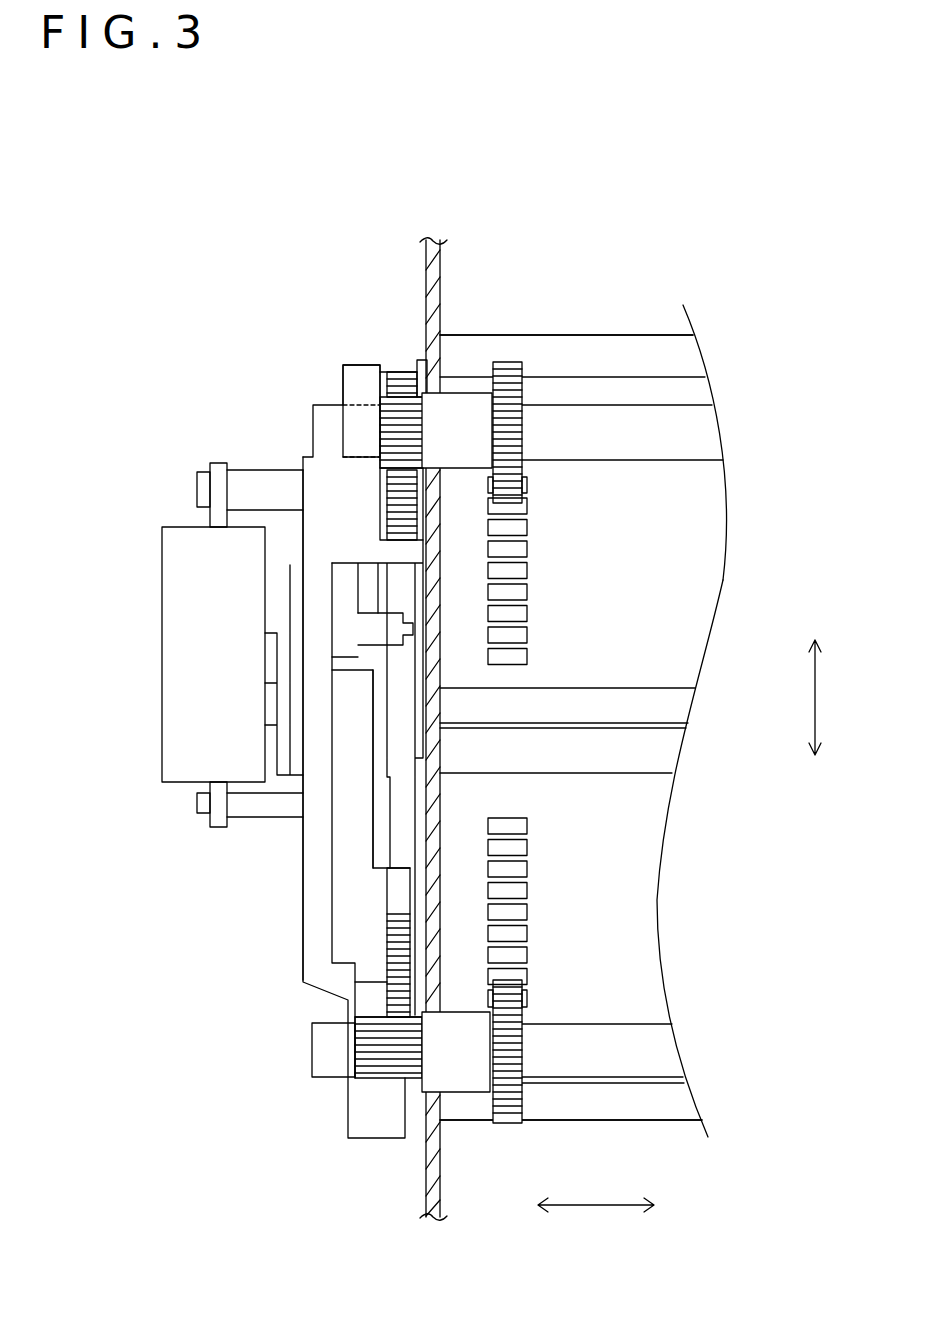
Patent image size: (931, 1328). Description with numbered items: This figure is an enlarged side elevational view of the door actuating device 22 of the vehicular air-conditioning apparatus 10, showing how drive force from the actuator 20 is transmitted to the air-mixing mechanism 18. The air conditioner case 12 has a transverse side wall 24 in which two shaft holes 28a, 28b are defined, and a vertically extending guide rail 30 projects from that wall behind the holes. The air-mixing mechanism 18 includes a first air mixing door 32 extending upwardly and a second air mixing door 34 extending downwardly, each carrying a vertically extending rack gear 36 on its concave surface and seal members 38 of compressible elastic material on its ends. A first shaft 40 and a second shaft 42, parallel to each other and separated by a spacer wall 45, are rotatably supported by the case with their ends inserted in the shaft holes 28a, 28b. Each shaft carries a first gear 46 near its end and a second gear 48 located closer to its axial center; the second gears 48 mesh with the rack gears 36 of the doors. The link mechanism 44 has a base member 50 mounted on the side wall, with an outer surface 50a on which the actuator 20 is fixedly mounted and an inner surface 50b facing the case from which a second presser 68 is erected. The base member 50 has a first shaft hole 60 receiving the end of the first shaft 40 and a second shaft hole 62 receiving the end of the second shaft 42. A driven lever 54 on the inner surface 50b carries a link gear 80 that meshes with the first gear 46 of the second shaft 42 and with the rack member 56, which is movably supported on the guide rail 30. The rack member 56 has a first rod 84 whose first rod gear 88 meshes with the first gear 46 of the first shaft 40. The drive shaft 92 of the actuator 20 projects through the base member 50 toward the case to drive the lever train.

The vehicular air-conditioning apparatus 10 is at (284, 271).
The air conditioner case 12 is at (450, 264).
The air-mixing mechanism 18 is at (748, 516).
The actuator 20 is at (143, 700).
The door actuating device 22 is at (280, 968).
The transverse side wall 24 is at (426, 317).
The shaft hole 28a is at (438, 399).
The shaft hole 28b is at (440, 1094).
The guide rail 30 is at (425, 357).
The first air mixing door 32 is at (702, 591).
The second air mixing door 34 is at (645, 932).
The rack gears 36 is at (515, 572).
The seal members 38 is at (619, 333).
The first shaft 40 is at (698, 434).
The second shaft 42 is at (658, 1053).
The link mechanism 44 is at (314, 908).
The spacer wall 45 is at (656, 728).
The first gears 46 is at (410, 433).
The second gears 48 is at (512, 393).
The base member 50 is at (318, 479).
The outer surface 50a is at (302, 862).
The inner surface 50b is at (330, 818).
The driven lever 54 is at (376, 887).
The rack member 56 is at (386, 366).
The first shaft hole 60 is at (352, 419).
The second shaft hole 62 is at (332, 1022).
The second presser 68 is at (372, 632).
The link gear 80 is at (398, 960).
The first rod 84 is at (436, 520).
The first rod gear 88 is at (418, 497).
The drive shaft 92 is at (268, 706).